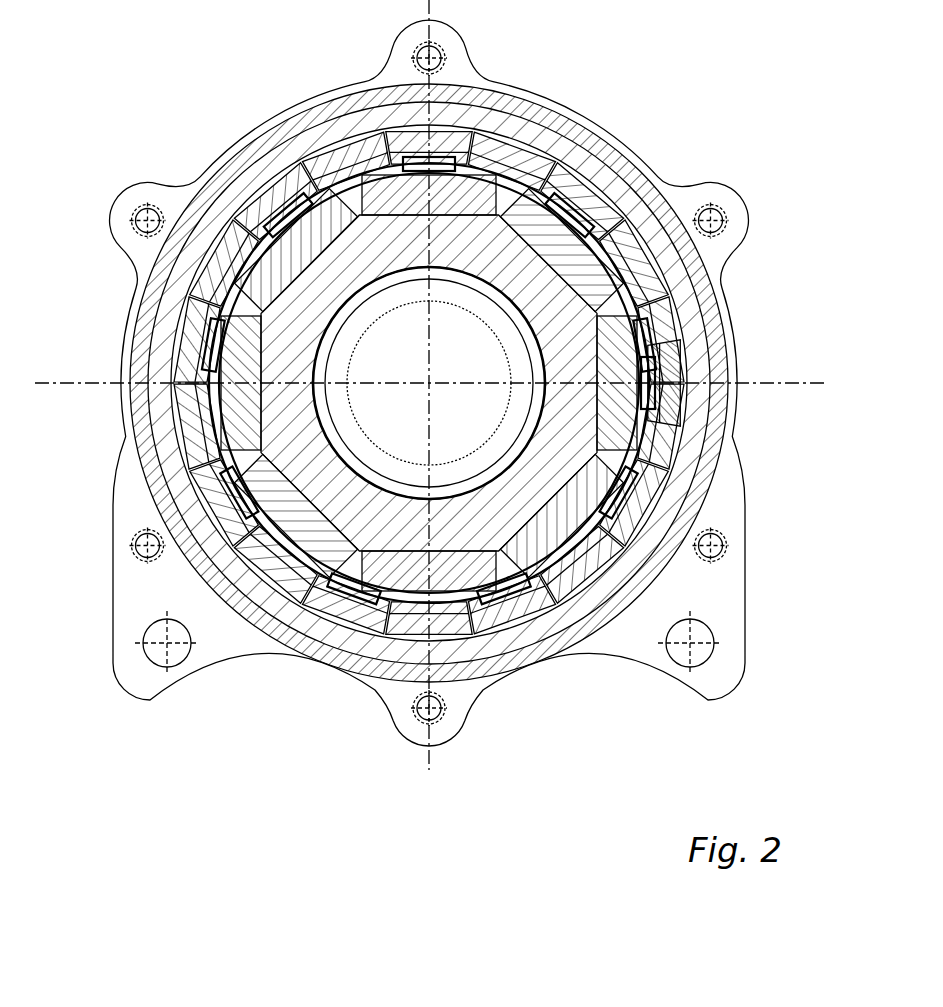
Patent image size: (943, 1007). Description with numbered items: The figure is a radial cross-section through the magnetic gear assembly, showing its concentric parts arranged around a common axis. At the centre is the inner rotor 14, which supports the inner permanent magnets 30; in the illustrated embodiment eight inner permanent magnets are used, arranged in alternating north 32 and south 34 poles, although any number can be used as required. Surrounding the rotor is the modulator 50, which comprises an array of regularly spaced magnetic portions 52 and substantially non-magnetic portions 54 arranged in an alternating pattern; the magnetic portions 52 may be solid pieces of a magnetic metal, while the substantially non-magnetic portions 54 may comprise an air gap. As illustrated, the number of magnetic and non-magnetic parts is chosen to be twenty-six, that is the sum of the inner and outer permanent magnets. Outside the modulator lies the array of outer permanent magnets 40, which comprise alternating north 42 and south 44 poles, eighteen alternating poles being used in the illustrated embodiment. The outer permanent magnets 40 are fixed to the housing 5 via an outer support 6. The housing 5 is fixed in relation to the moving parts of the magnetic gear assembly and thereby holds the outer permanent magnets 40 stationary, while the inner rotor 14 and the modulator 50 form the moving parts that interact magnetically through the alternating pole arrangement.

The housing 5 is at (197, 213).
The outer support 6 is at (265, 180).
The inner rotor 14 is at (323, 288).
The inner permanent magnets 30 is at (366, 308).
The north poles of inner permanent magnets 32 is at (478, 195).
The south poles of inner permanent magnets 34 is at (540, 232).
The outer permanent magnets 40 is at (438, 383).
The north poles of outer permanent magnets 42 is at (673, 360).
The south poles of outer permanent magnets 44 is at (660, 450).
The modulator 50 is at (190, 405).
The magnetic portions 52 is at (600, 498).
The substantially non-magnetic portions 54 is at (640, 460).